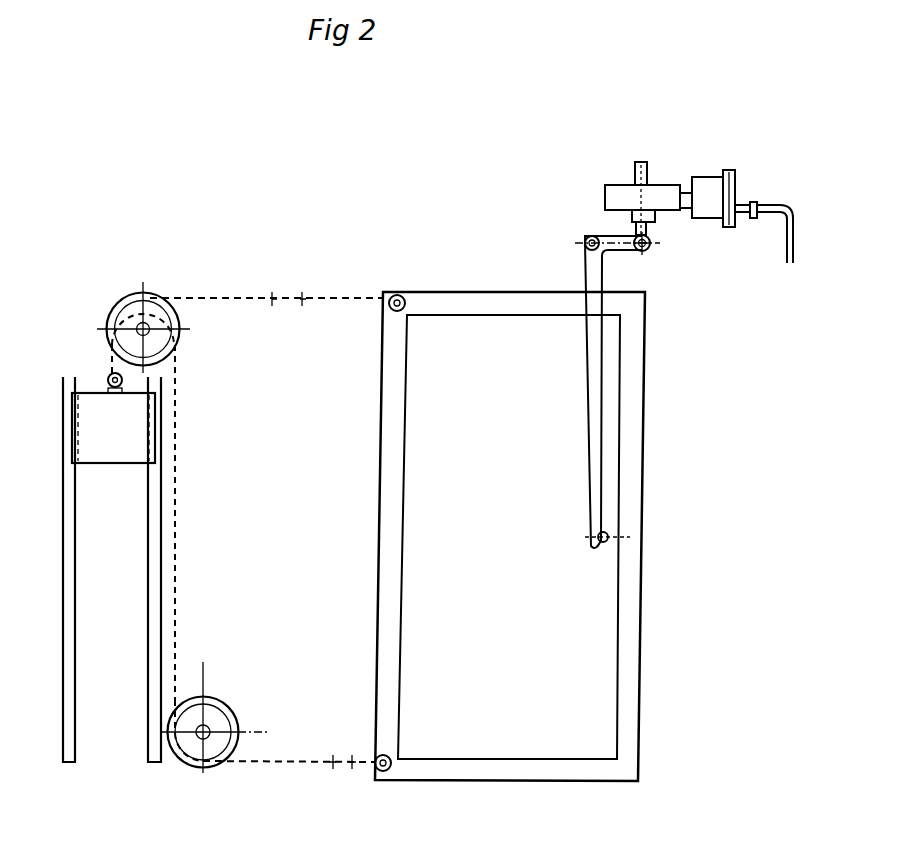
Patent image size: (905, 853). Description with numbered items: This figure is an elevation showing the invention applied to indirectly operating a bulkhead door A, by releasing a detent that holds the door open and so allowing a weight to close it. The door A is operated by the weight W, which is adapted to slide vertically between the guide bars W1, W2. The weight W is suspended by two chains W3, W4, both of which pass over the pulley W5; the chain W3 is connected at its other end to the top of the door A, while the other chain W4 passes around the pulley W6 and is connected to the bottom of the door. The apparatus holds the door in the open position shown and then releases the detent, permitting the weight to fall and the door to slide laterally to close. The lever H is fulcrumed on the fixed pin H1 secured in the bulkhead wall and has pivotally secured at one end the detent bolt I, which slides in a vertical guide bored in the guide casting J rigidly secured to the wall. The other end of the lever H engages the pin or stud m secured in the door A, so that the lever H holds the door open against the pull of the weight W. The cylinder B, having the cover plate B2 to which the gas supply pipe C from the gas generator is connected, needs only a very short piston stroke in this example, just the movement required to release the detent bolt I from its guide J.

The bulkhead door A is at (383, 467).
The weight W is at (95, 448).
The guide bar W1 is at (70, 600).
The guide bar W2 is at (148, 683).
The chain W3 is at (258, 308).
The chain W4 is at (302, 760).
The pulley W5 is at (148, 318).
The pulley W6 is at (210, 712).
The lever H is at (592, 395).
The fixed pin H1 is at (586, 246).
The pin or stud m is at (608, 536).
The guide J is at (612, 192).
The detent bolt I is at (644, 170).
The cylinder B is at (705, 214).
The cover plate B2 is at (732, 186).
The gas supply pipe C is at (788, 238).